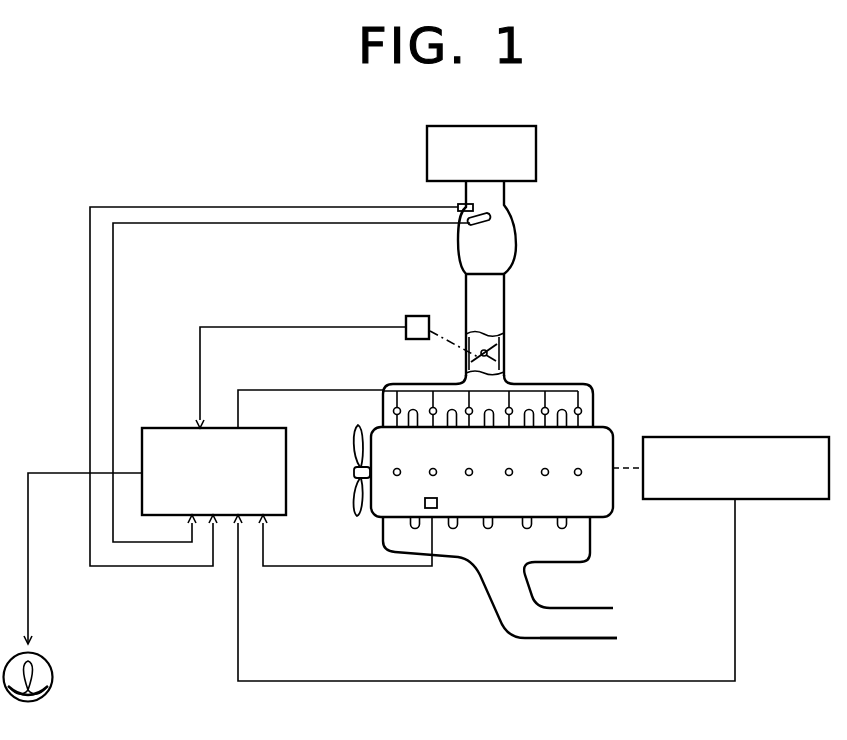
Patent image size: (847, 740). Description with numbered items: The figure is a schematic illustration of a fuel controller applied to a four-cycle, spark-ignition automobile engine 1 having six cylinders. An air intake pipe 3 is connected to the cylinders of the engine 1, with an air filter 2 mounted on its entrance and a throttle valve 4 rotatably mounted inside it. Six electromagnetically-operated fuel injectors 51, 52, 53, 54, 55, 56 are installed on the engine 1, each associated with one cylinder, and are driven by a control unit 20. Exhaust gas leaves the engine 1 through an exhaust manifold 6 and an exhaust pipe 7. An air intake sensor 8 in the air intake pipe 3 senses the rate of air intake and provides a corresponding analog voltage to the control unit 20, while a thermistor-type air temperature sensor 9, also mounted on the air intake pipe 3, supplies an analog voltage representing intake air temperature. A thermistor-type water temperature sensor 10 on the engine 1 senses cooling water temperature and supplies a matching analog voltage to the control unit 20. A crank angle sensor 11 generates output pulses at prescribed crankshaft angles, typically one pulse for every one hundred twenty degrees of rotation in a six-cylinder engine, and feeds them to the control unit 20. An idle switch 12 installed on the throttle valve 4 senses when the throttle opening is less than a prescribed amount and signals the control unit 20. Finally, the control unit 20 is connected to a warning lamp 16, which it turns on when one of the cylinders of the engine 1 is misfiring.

The engine 1 is at (448, 464).
The air filter 2 is at (538, 147).
The air intake pipe 3 is at (505, 310).
The throttle valve 4 is at (500, 355).
The exhaust manifold 6 is at (592, 538).
The exhaust pipe 7 is at (553, 640).
The air intake sensor 8 is at (480, 226).
The air temperature sensor 9 is at (458, 206).
The water temperature sensor 10 is at (425, 500).
The crank angle sensor 11 is at (745, 437).
The idle switch 12 is at (418, 316).
The warning lamp 16 is at (55, 673).
The control unit 20 is at (180, 427).
The fuel injector 51 is at (396, 418).
The fuel injector 52 is at (432, 418).
The fuel injector 53 is at (468, 418).
The fuel injector 54 is at (508, 418).
The fuel injector 55 is at (544, 418).
The fuel injector 56 is at (577, 418).